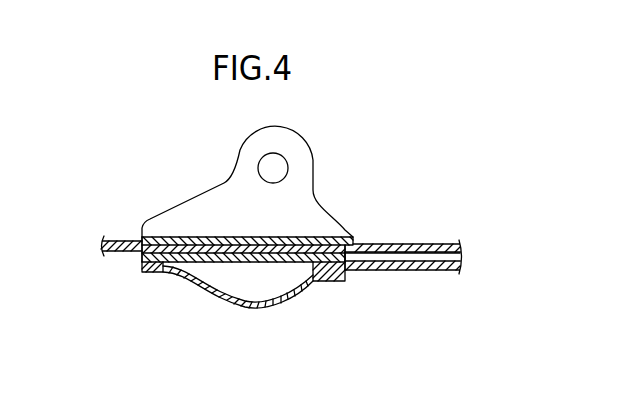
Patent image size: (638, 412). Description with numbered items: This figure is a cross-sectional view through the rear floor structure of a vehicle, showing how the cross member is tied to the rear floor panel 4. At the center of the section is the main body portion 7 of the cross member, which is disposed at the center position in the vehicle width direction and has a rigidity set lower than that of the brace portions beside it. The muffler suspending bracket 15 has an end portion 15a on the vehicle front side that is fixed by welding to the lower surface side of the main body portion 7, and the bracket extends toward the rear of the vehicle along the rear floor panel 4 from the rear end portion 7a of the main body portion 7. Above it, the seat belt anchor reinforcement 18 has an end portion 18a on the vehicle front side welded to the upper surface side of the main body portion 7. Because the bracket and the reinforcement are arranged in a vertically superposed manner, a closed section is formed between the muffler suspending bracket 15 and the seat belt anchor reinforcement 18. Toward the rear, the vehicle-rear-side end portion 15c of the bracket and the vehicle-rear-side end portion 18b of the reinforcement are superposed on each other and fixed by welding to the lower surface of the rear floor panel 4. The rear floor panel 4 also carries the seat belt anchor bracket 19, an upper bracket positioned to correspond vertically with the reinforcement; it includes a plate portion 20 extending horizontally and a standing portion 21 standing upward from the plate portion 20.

The rear floor panel 4 is at (421, 244).
The main body portion 7 is at (408, 270).
The rear end portion 7a is at (317, 281).
The muffler suspending bracket 15 is at (245, 308).
The end portion 15a is at (333, 281).
The vehicle-rear-side end portion 15c is at (145, 272).
The seat belt anchor reinforcement 18 is at (178, 238).
The end portion 18a is at (332, 238).
The vehicle-rear-side end portion 18b is at (141, 262).
The seat belt anchor bracket 19 is at (318, 158).
The plate portion 20 is at (140, 237).
The standing portion 21 is at (217, 198).